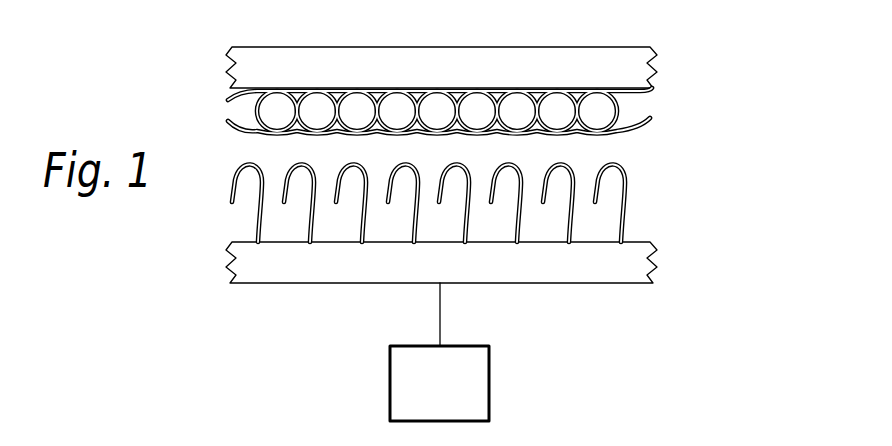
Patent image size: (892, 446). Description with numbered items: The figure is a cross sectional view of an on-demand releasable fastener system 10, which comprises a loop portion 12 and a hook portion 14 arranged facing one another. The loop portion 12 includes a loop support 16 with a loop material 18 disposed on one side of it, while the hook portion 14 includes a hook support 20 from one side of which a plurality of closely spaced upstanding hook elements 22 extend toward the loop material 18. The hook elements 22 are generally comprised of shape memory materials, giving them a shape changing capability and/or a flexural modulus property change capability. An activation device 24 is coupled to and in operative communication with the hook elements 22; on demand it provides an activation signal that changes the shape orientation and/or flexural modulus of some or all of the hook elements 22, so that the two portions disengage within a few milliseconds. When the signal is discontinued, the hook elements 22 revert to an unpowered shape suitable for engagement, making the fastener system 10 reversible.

The on-demand releasable fastener system 10 is at (450, 224).
The loop portion 12 is at (434, 105).
The hook portion 14 is at (425, 292).
The loop support 16 is at (632, 71).
The loop material 18 is at (587, 135).
The hook support 20 is at (615, 268).
The hook elements 22 is at (632, 193).
The activation device 24 is at (489, 377).